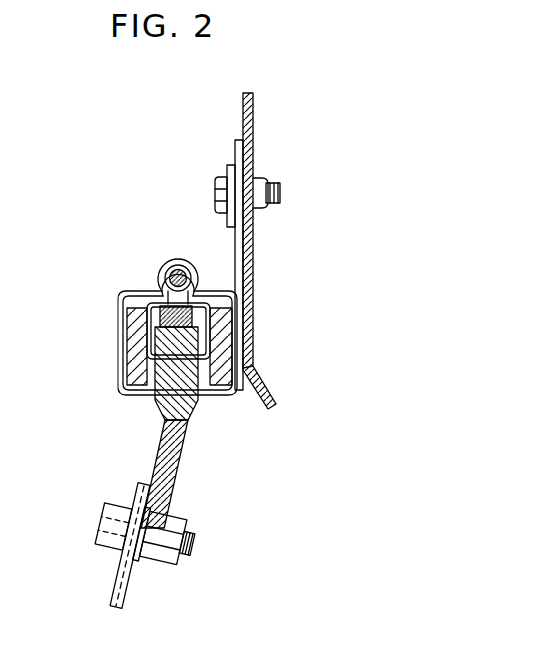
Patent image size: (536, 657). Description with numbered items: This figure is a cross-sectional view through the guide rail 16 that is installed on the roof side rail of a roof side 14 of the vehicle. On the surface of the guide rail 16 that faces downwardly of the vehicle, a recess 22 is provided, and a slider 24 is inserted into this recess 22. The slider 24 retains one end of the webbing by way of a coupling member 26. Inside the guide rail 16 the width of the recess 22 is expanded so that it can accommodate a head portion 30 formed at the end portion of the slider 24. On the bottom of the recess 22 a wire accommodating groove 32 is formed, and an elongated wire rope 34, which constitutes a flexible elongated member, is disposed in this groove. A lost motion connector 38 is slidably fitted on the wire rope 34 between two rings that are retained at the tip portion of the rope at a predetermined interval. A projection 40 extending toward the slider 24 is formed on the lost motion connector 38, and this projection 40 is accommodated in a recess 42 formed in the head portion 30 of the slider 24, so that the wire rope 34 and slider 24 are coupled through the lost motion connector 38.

The roof side 14 is at (243, 110).
The guide rail 16 is at (112, 297).
The recess 22 is at (152, 412).
The slider 24 is at (170, 477).
The coupling member 26 is at (112, 588).
The head portion 30 is at (127, 348).
The wire accommodating groove 32 is at (172, 263).
The wire rope 34 is at (183, 268).
The lost motion connector 38 is at (197, 293).
The projection 40 is at (236, 323).
The recess 42 is at (140, 294).